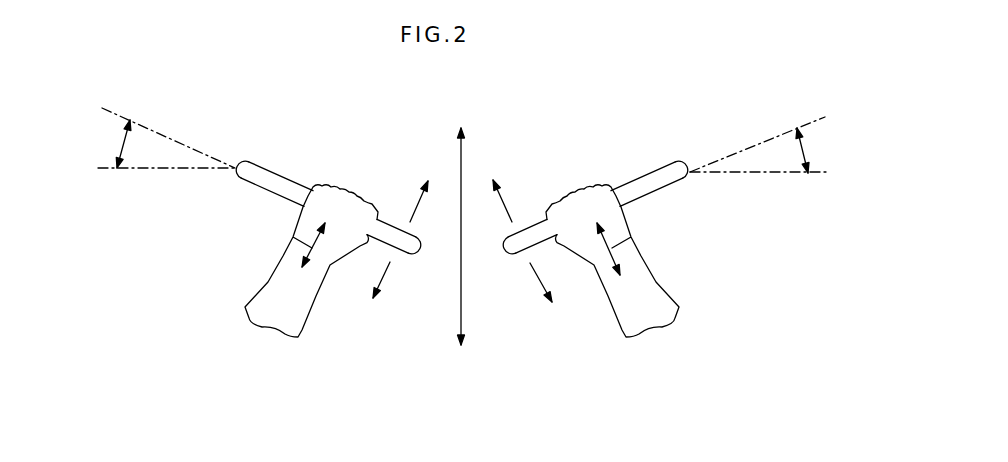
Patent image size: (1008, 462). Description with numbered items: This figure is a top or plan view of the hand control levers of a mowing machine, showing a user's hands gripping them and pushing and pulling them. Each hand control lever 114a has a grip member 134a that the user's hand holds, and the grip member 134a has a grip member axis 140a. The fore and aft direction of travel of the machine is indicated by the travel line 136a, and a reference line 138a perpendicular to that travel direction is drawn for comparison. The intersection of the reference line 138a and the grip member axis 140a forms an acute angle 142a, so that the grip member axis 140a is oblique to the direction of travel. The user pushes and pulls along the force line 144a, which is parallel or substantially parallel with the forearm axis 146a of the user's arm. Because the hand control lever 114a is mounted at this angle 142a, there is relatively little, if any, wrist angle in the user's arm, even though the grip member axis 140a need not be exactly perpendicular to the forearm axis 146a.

The hand control lever 114a is at (292, 177).
The grip member 134a is at (270, 167).
The travel line 136a is at (462, 302).
The reference line 138a is at (90, 168).
The grip member axis 140a is at (104, 107).
The acute angle 142a is at (463, 146).
The force line 144a is at (400, 198).
The forearm axis 146a is at (292, 238).